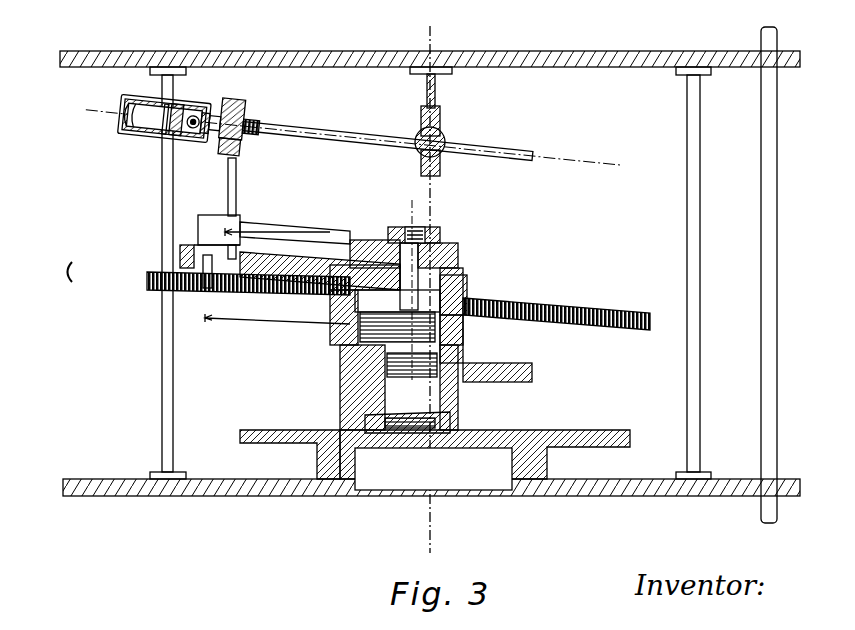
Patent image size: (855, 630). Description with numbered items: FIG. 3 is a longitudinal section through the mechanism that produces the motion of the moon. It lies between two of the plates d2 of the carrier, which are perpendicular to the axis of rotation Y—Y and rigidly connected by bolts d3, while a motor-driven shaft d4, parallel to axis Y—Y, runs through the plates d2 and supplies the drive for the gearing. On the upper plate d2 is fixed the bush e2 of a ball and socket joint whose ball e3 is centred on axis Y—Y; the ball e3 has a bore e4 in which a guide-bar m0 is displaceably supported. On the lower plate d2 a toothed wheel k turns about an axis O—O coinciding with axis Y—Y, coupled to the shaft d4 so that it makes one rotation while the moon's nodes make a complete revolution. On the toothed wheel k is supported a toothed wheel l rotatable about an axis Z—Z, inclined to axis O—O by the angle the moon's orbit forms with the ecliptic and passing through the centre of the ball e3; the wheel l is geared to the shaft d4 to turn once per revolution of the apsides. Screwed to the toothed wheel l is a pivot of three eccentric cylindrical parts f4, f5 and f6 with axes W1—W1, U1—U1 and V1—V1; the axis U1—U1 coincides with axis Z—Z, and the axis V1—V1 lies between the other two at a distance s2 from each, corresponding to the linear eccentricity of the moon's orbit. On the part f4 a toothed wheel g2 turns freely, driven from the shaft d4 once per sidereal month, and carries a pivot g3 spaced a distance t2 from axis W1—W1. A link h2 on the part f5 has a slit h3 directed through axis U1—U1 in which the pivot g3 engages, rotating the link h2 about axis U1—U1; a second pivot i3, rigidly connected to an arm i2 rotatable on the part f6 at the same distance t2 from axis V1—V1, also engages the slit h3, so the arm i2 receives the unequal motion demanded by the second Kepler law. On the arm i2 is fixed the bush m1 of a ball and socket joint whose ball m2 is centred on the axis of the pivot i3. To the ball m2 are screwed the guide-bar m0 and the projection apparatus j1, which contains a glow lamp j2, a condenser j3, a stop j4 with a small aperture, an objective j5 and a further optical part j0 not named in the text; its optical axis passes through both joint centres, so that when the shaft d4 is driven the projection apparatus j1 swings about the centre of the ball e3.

The axis of rotation Y— Y is at (430, 283).
The axis O— O is at (425, 458).
The plates d2 is at (596, 51).
The bolts d3 is at (687, 226).
The shaft d4 is at (761, 284).
The bush of ball and socket joint e2 is at (421, 127).
The ball e3 is at (421, 167).
The bore e4 is at (444, 142).
The guide-bar m0 is at (347, 122).
The bush of ball and socket joint m1 is at (243, 152).
The ball m2 is at (243, 116).
The projection apparatus j1 is at (132, 108).
The glow lamp j2 is at (193, 134).
The condenser j3 is at (203, 116).
The stop j4 is at (165, 128).
The objective j5 is at (126, 130).
The disc j0 is at (176, 128).
The second pivot i3 is at (200, 242).
The arm i2 is at (296, 234).
The slit h3 is at (252, 258).
The link h2 is at (263, 282).
The pivot g3 is at (206, 292).
The toothed wheel g2 is at (612, 314).
The distance t2 is at (277, 286).
The axis W1— W1 is at (382, 259).
The axis U1— U1 is at (458, 262).
The axis V1— V1 is at (422, 287).
The cylindrical pivot part f6 is at (442, 245).
The cylindrical pivot part f5 is at (468, 294).
The cylindrical pivot part f4 is at (462, 332).
The distance s2 is at (398, 306).
The axis Z— Z is at (422, 354).
The toothed wheel l is at (522, 374).
The toothed wheel k is at (605, 430).